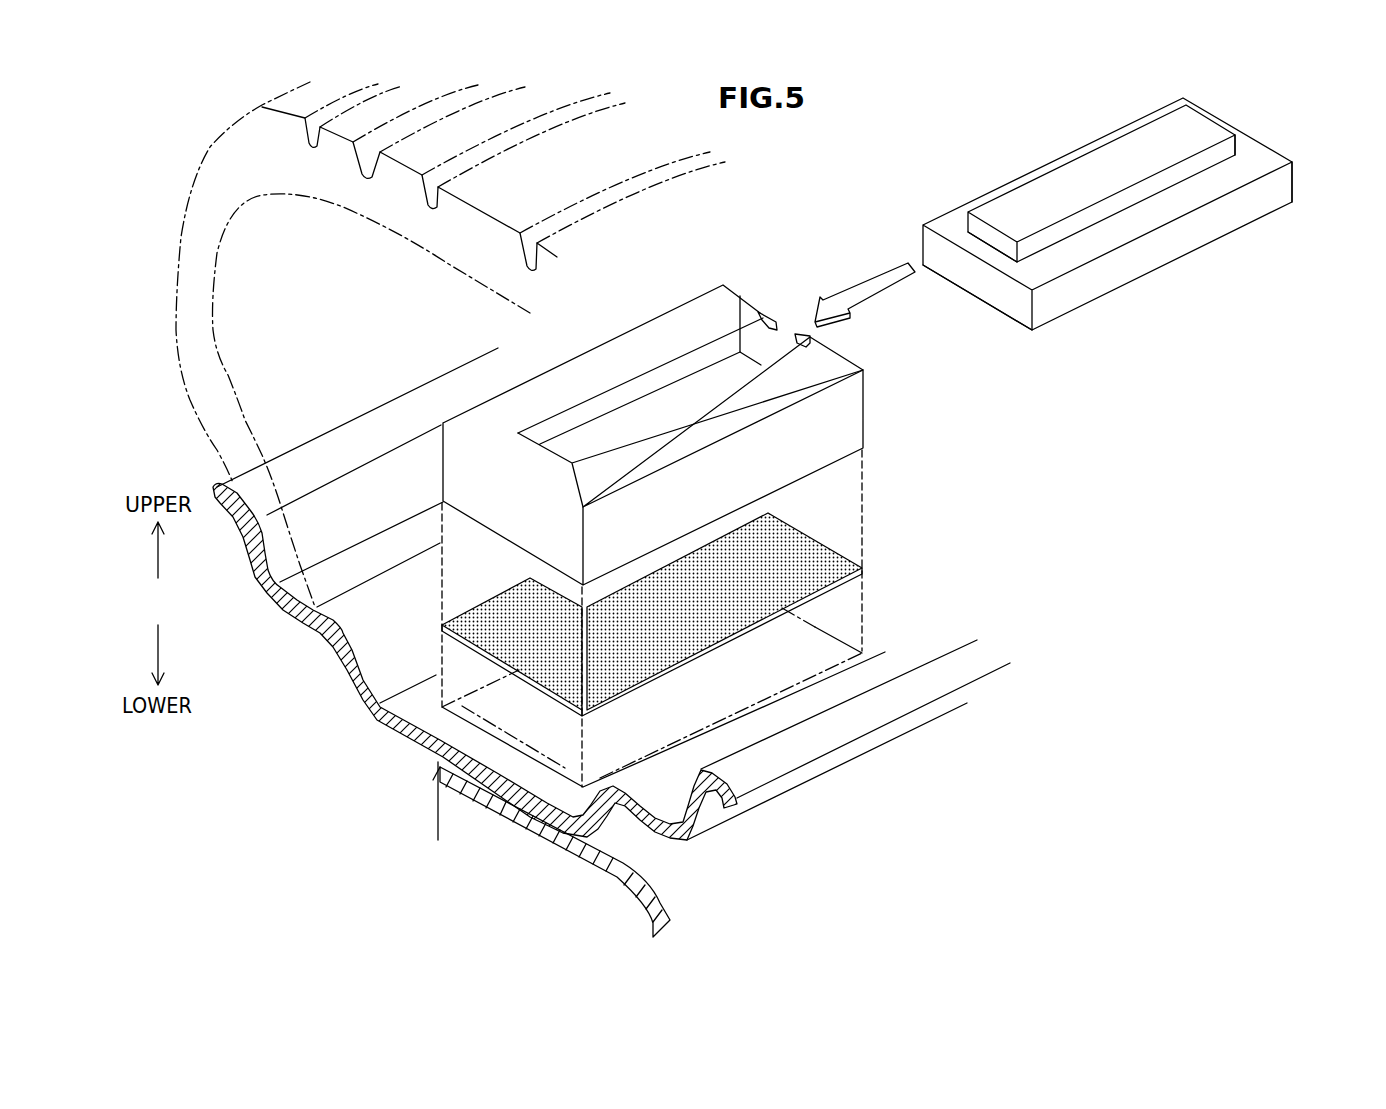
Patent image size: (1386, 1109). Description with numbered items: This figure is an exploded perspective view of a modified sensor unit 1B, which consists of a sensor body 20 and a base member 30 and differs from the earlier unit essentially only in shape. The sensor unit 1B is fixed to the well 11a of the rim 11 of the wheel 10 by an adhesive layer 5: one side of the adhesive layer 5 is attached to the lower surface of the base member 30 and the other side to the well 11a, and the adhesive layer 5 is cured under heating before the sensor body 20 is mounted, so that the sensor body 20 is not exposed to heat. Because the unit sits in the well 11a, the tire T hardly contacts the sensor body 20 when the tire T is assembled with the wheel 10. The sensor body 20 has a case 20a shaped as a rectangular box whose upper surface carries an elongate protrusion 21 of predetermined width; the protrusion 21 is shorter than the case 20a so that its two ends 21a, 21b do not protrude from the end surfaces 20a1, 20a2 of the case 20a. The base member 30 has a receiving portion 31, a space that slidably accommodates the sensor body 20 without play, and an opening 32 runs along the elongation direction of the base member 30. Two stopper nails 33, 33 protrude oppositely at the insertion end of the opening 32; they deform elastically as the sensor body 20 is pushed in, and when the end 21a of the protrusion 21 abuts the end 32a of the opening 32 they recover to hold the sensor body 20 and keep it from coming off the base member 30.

The tire T is at (210, 173).
The wheel 10 is at (831, 853).
The rim 11 is at (826, 734).
The well 11a is at (447, 732).
The adhesive layer 5 is at (800, 550).
The base member 30 is at (663, 395).
The receiving portion 31 is at (772, 350).
The opening 32 is at (627, 393).
The end of the opening 32a is at (555, 450).
The stopper nails 33 is at (810, 340).
The sensor unit 1B is at (1012, 404).
The sensor body 20 is at (1078, 228).
The case 20a is at (1146, 228).
The end surface of the case 20a1 is at (1008, 293).
The end surface of the case 20a2 is at (1293, 182).
The protrusion 21 is at (1104, 216).
The end of the protrusion 21a is at (992, 237).
The end of the protrusion 21b is at (1235, 147).